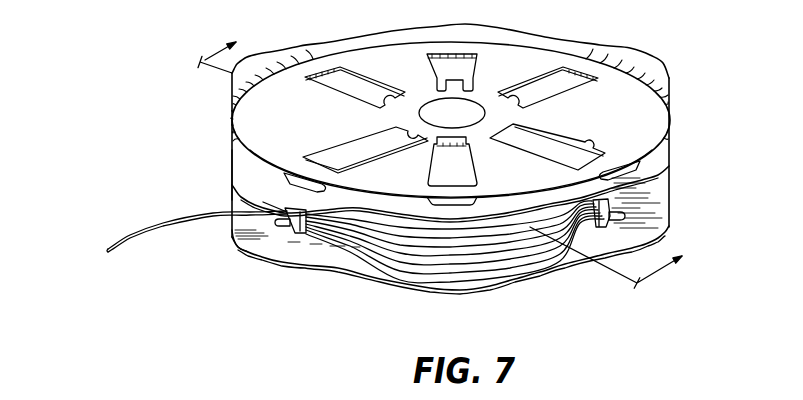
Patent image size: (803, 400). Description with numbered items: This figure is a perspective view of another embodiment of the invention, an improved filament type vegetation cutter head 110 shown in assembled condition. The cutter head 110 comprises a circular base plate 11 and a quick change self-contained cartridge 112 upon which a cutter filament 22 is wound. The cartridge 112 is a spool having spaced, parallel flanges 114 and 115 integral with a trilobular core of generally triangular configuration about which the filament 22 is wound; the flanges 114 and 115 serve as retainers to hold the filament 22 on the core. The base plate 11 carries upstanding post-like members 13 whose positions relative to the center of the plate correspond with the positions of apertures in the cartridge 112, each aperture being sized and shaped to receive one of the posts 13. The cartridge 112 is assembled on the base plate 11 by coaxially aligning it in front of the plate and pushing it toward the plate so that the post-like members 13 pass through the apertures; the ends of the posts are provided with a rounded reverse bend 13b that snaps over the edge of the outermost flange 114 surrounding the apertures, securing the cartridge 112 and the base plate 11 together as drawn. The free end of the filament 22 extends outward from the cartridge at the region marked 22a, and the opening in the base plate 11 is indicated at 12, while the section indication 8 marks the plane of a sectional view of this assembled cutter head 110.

The filament type vegetation cutter head 110 is at (682, 48).
The circular base plate 11 is at (460, 50).
The central hole 12 is at (470, 113).
The flange 115 is at (232, 185).
The cutter filament 22 is at (430, 270).
The free end of strip 22a is at (129, 250).
The upstanding post-like members 13 is at (285, 223).
The rounded reverse bend 13b is at (626, 218).
The quick change self-contained cartridge 112 is at (515, 279).
The outermost flange 114 is at (237, 248).
The section line 8- 8 is at (448, 155).